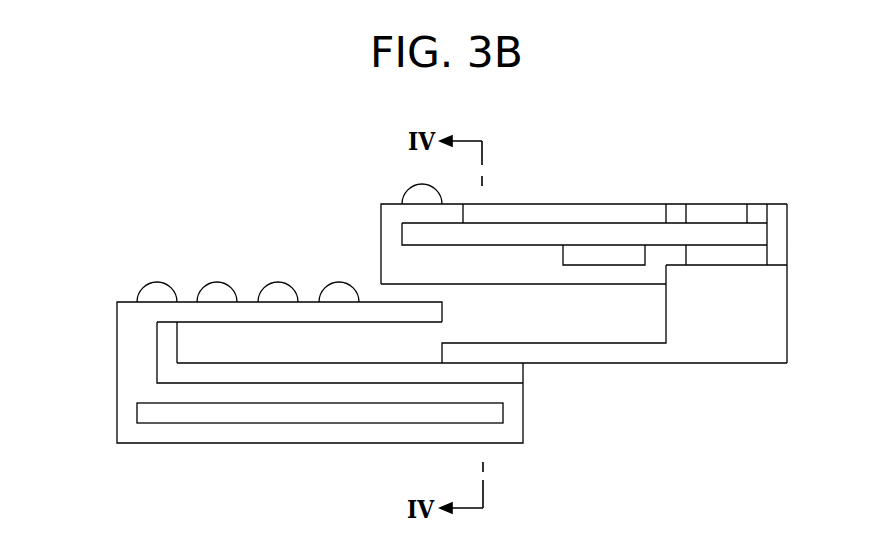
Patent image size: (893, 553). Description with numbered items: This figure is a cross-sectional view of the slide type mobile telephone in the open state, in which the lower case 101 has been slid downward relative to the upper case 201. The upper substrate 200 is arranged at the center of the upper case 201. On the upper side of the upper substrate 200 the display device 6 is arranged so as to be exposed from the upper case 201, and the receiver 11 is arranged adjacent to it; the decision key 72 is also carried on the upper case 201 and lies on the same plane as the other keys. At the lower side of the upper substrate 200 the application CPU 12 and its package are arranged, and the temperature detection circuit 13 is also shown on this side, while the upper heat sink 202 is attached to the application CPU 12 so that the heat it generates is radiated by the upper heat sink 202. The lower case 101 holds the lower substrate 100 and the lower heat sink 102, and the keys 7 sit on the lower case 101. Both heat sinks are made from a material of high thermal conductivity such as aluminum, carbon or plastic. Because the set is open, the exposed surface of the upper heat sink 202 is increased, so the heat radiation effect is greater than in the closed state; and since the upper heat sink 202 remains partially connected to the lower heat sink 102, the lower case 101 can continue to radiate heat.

The display device 6 is at (615, 205).
The key 7 is at (137, 282).
The receiver 11 is at (710, 205).
The application CPU 12 is at (762, 255).
The temperature detection circuit 13 is at (593, 252).
The decision key 72 is at (407, 190).
The lower substrate 100 is at (495, 415).
The lower case 101 is at (117, 412).
The lower heat sink 102 is at (168, 352).
The upper substrate 200 is at (757, 232).
The upper case 201 is at (381, 213).
The upper heat sink 202 is at (765, 322).